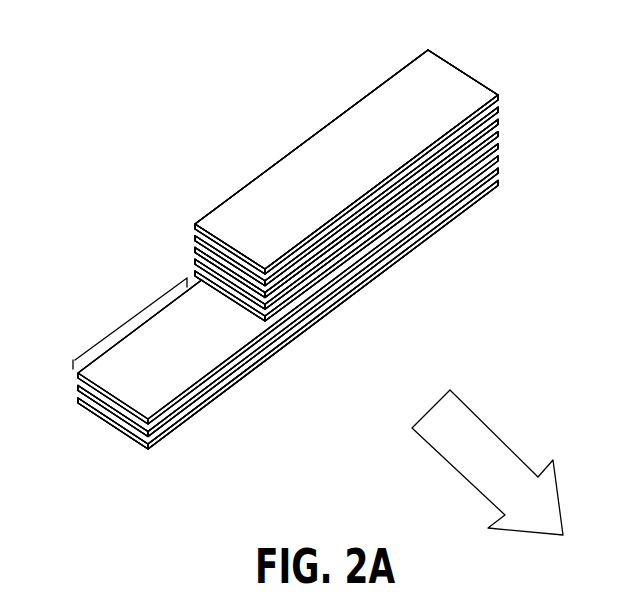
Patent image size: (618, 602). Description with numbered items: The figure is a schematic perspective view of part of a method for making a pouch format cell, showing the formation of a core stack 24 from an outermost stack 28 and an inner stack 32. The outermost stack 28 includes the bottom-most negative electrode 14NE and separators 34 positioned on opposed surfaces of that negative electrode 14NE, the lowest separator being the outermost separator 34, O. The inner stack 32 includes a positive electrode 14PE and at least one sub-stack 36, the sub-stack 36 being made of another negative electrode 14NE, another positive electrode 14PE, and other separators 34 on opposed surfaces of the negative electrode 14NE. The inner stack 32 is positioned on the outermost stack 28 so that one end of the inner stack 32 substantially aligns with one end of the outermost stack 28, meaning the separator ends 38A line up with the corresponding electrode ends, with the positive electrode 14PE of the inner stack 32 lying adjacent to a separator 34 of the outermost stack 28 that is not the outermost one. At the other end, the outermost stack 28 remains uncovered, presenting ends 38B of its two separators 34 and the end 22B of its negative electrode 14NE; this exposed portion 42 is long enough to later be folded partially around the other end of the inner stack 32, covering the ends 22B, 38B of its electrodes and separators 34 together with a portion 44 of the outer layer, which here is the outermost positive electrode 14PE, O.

The positive electrode 14PE is at (423, 103).
The negative electrode 14NE is at (412, 258).
The portion of the outer layer of the inner stack 44 is at (260, 224).
The inner stack 32 is at (174, 215).
The exposed portion 42 is at (128, 313).
The sub-stack 36 is at (511, 90).
The core stack 24 is at (571, 88).
The end of separator 38A is at (500, 184).
The separator 34 is at (353, 210).
The other end of separator 38B is at (262, 332).
The other end of electrode 22B is at (250, 308).
The outermost stack 28 is at (176, 397).